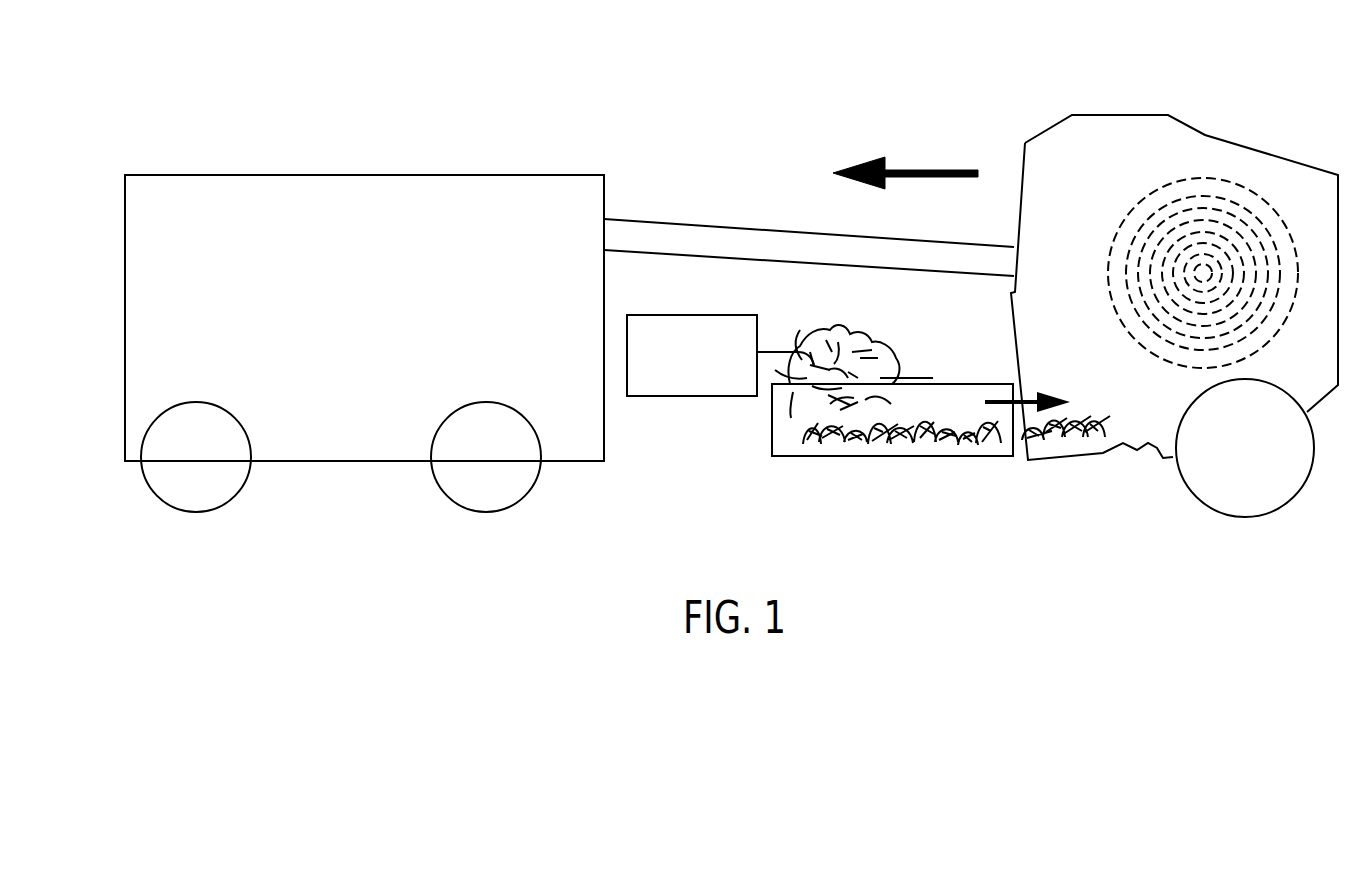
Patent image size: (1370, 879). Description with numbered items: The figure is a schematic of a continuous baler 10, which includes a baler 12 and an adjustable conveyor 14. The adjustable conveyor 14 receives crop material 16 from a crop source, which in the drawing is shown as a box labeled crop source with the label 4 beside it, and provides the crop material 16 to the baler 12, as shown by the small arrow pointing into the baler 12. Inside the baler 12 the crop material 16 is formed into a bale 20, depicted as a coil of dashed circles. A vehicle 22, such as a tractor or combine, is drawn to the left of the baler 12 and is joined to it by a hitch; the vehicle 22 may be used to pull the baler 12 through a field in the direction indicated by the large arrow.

The crop source 4 is at (713, 397).
The continuous baler 10 is at (906, 104).
The baler 12 is at (1142, 113).
The adjustable conveyor 14 is at (795, 457).
The crop material 16 is at (883, 363).
The bale 20 is at (1213, 178).
The vehicle 22 is at (325, 175).